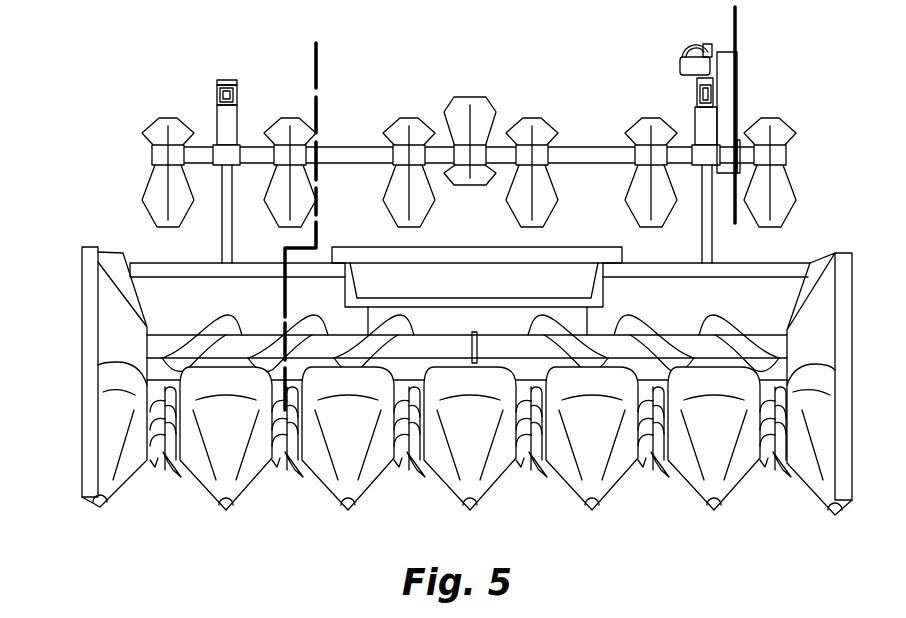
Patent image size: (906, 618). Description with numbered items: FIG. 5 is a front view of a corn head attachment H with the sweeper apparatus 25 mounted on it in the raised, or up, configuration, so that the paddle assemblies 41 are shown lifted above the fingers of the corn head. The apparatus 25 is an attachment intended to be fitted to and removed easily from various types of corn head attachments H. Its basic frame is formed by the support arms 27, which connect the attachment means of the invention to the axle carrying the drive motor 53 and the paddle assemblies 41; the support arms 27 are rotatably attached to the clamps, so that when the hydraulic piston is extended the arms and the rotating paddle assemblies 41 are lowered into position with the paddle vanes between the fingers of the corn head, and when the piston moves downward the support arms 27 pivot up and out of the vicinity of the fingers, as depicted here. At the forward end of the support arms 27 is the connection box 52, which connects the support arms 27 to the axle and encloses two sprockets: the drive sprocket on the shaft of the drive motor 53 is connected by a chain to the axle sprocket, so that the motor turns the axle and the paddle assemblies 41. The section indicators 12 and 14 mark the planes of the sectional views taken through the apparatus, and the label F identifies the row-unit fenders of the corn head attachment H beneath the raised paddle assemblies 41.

The corn head attachment H is at (108, 238).
The row unit hood / fender F is at (733, 478).
The paddle assemblies 41 is at (388, 130).
The support arms 27 is at (237, 108).
The apparatus 25 is at (217, 93).
The drive motor 53 is at (680, 62).
The connection box 52 is at (727, 72).
The section line 14- 14 is at (743, 22).
The section line 12- 12 is at (332, 65).